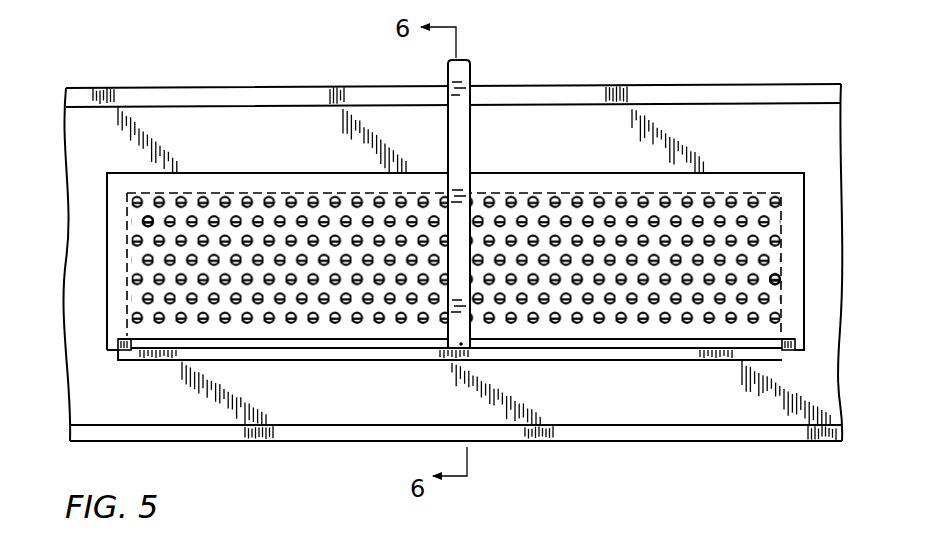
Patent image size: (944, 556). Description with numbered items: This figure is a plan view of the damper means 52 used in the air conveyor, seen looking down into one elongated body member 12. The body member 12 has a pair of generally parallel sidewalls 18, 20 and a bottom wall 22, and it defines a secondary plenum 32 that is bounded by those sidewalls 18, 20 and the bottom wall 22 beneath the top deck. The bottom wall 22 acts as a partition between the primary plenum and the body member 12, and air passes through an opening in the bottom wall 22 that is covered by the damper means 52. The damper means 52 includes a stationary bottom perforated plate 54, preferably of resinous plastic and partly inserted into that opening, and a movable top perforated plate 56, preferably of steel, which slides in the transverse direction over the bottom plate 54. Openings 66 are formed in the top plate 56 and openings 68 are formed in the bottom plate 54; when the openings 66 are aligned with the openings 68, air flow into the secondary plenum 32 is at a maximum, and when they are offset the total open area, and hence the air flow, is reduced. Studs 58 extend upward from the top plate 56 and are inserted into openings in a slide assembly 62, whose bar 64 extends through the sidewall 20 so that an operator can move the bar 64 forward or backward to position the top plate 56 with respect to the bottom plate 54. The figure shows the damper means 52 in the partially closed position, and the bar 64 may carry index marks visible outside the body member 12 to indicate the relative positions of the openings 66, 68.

The elongated body member 12 is at (203, 82).
The sidewall 18 is at (596, 441).
The sidewall 20 is at (285, 86).
The bottom wall 22 is at (670, 408).
The secondary plenum 32 is at (622, 117).
The damper means 52 is at (135, 175).
The bottom perforated plate 54 is at (222, 360).
The top perforated plate 56 is at (252, 180).
The studs 58 is at (122, 352).
The slide assembly 62 is at (480, 352).
The bar 64 is at (470, 78).
The openings 66 is at (145, 221).
The openings 68 is at (145, 222).